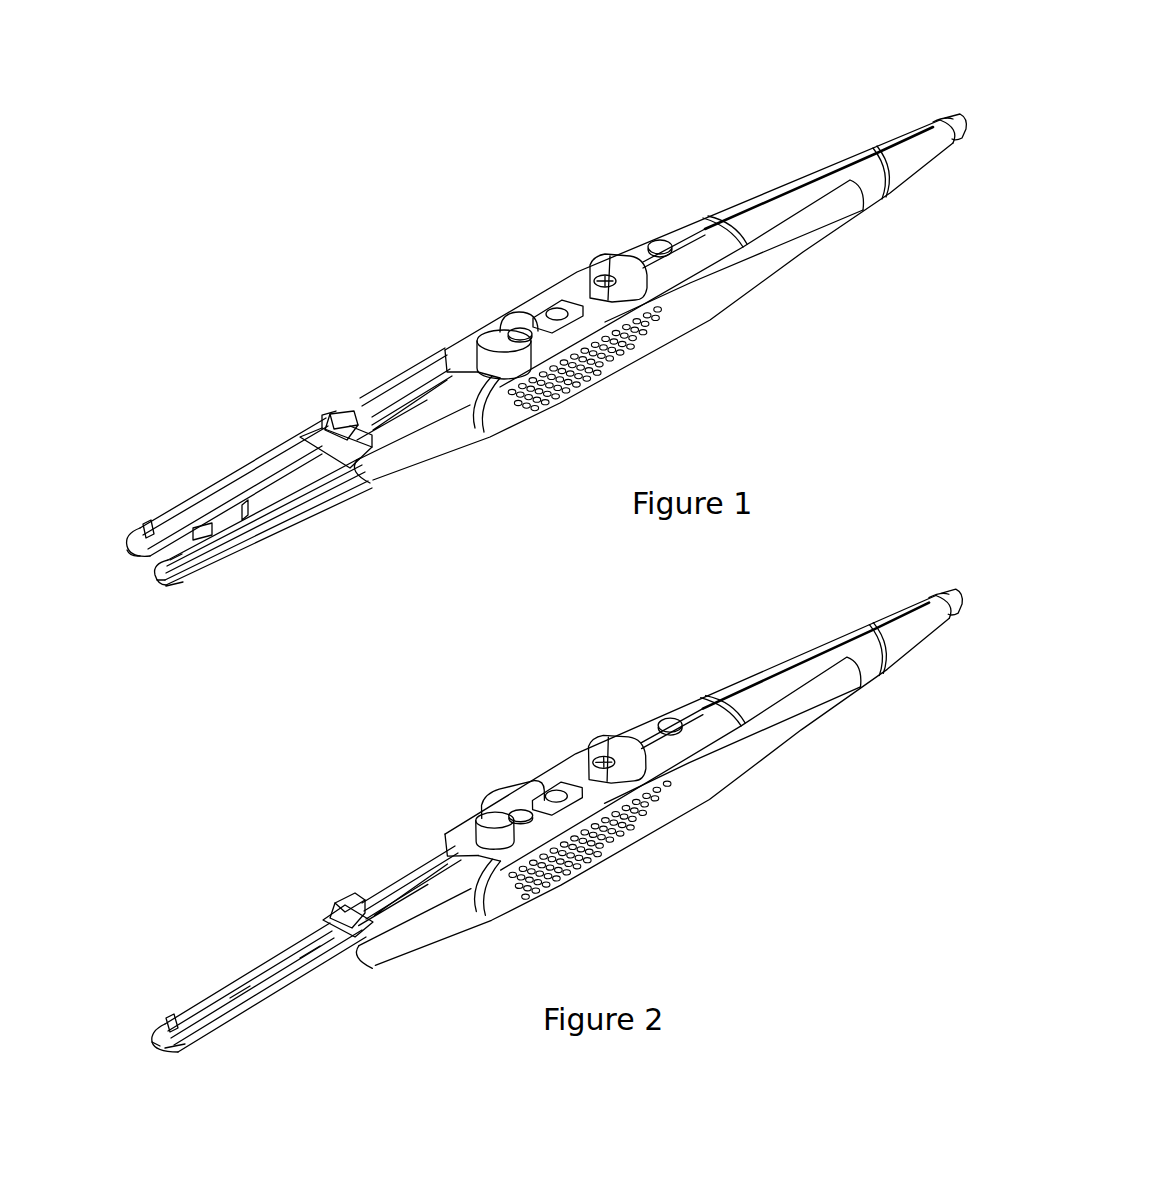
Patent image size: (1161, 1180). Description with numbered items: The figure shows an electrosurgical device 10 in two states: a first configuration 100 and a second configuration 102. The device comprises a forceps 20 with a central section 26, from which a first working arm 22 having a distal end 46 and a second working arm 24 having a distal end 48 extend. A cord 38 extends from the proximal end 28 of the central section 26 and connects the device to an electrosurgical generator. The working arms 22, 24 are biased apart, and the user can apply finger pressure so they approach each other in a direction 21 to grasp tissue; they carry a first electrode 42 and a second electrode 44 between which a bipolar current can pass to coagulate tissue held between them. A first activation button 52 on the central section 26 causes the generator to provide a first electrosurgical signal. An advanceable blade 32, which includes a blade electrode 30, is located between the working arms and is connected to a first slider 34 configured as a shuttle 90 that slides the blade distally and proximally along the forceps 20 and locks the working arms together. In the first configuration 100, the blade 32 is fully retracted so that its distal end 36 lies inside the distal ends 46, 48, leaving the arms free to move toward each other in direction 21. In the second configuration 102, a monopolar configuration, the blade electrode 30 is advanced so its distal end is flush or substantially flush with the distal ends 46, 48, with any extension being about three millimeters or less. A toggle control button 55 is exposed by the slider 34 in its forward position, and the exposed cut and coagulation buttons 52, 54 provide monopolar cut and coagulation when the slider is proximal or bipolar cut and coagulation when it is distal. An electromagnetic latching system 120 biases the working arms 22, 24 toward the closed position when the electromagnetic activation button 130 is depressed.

In FIG. 1, the first configuration 100 is at (765, 125).
In FIG. 1, the electrosurgical device 10 is at (372, 238).
In FIG. 2, the electrosurgical device 10 is at (400, 778).
In FIG. 1, the electromagnetic latching system 120 is at (322, 330).
In FIG. 2, the electromagnetic latching system 120 is at (348, 865).
In FIG. 1, the forceps 20 is at (205, 455).
In FIG. 1, the first working arm 22 is at (262, 462).
In FIG. 1, the second working arm 24 is at (307, 512).
In FIG. 1, the direction 21 is at (188, 580).
In FIG. 1, the advanceable blade 32 is at (300, 458).
In FIG. 2, the advanceable blade 32 is at (255, 978).
In FIG. 1, the distal end of the blade 36 is at (193, 532).
In FIG. 2, the distal end of the blade 36 is at (152, 1040).
In FIG. 1, the first electrode 42 is at (133, 562).
In FIG. 1, the second electrode 44 is at (168, 578).
In FIG. 1, the distal end of the first working arm 46 is at (127, 555).
In FIG. 2, the distal end of the first working arm 46 is at (155, 1027).
In FIG. 1, the distal end of the second working arm 48 is at (175, 585).
In FIG. 2, the distal end of the second working arm 48 is at (181, 1042).
In FIG. 1, the central section 26 is at (775, 182).
In FIG. 1, the proximal end 28 is at (930, 122).
In FIG. 1, the cord 38 is at (965, 140).
In FIG. 1, the electromagnetic activation button 130 is at (658, 240).
In FIG. 2, the electromagnetic activation button 130 is at (670, 720).
In FIG. 1, the toggle control button 55 is at (603, 268).
In FIG. 2, the toggle control button 55 is at (603, 752).
In FIG. 1, the first activation button 52 is at (558, 305).
In FIG. 2, the first activation button 52 is at (556, 788).
In FIG. 1, the coagulation button 54 is at (520, 322).
In FIG. 2, the coagulation button 54 is at (522, 808).
In FIG. 1, the shuttle 90 is at (495, 312).
In FIG. 2, the shuttle 90 is at (485, 806).
In FIG. 1, the first slider 34 is at (540, 345).
In FIG. 2, the first slider 34 is at (505, 836).
In FIG. 2, the blade electrode 30 is at (167, 1018).
In FIG. 2, the second configuration 102 is at (640, 895).